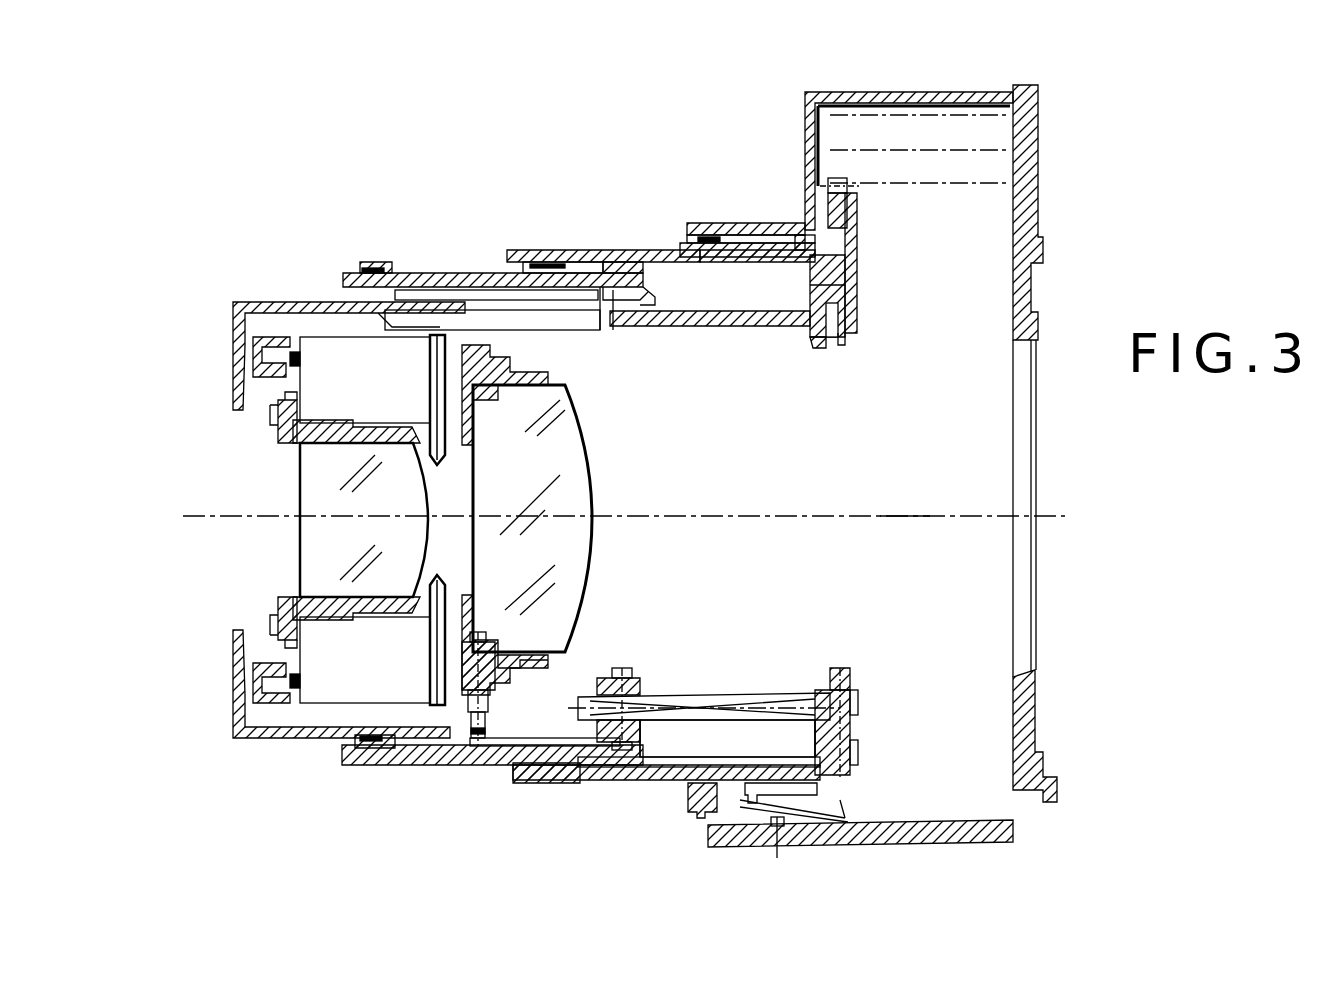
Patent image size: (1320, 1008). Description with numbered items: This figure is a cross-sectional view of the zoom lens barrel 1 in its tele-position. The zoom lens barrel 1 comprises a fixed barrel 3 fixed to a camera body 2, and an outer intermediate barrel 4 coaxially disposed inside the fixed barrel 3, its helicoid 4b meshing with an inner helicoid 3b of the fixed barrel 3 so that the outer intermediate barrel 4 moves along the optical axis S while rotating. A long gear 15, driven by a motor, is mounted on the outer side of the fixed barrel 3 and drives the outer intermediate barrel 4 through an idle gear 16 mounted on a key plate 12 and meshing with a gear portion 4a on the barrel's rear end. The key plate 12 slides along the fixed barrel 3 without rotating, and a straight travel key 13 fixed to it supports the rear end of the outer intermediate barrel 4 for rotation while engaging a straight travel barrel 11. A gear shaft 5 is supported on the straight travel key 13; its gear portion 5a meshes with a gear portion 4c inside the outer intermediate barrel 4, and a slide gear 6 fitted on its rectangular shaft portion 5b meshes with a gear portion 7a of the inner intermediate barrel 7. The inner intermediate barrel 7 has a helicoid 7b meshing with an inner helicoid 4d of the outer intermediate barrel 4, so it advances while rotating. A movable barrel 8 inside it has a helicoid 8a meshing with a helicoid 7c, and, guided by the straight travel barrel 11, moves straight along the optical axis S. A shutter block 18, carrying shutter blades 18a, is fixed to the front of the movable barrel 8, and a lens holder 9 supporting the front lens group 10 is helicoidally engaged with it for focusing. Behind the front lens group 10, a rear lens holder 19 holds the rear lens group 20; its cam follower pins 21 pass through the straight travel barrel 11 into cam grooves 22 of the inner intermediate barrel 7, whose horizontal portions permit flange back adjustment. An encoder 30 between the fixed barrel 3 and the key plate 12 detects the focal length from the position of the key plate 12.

The zoom lens barrel 1 is at (576, 188).
The camera body 2 is at (1030, 178).
The fixed barrel 3 is at (718, 228).
The inner helicoid 3b is at (735, 258).
The outer intermediate barrel 4 is at (640, 250).
The gear portion 4a is at (850, 785).
The helicoid 4b is at (773, 228).
The gear portion 4c is at (856, 262).
The inner helicoid 4d is at (668, 262).
The gear shaft 5 is at (749, 666).
The gear portion 5a is at (845, 668).
The shaft portion 5b is at (688, 695).
The slide gear 6 is at (620, 670).
The inner intermediate barrel 7 is at (418, 276).
The gear portion 7a is at (620, 300).
The helicoid 7b is at (592, 255).
The helicoid 7c is at (510, 300).
The movable barrel 8 is at (268, 303).
The helicoid 8a is at (440, 276).
The lens holder 9 is at (282, 412).
The front lens group 10 is at (318, 470).
The straight travel barrel 11 is at (565, 320).
The key plate 12 is at (856, 325).
The straight travel key 13 is at (712, 328).
The long gear 15 is at (938, 128).
The idle gear 16 is at (850, 192).
The shutter block 18 is at (325, 355).
The shutter blades 18a is at (462, 470).
The rear lens holder 19 is at (520, 660).
The rear lens group 20 is at (572, 548).
The cam follower pins 21 is at (485, 748).
The cam grooves 22 is at (472, 755).
The encoder 30 is at (860, 797).
The optical axis S is at (905, 505).